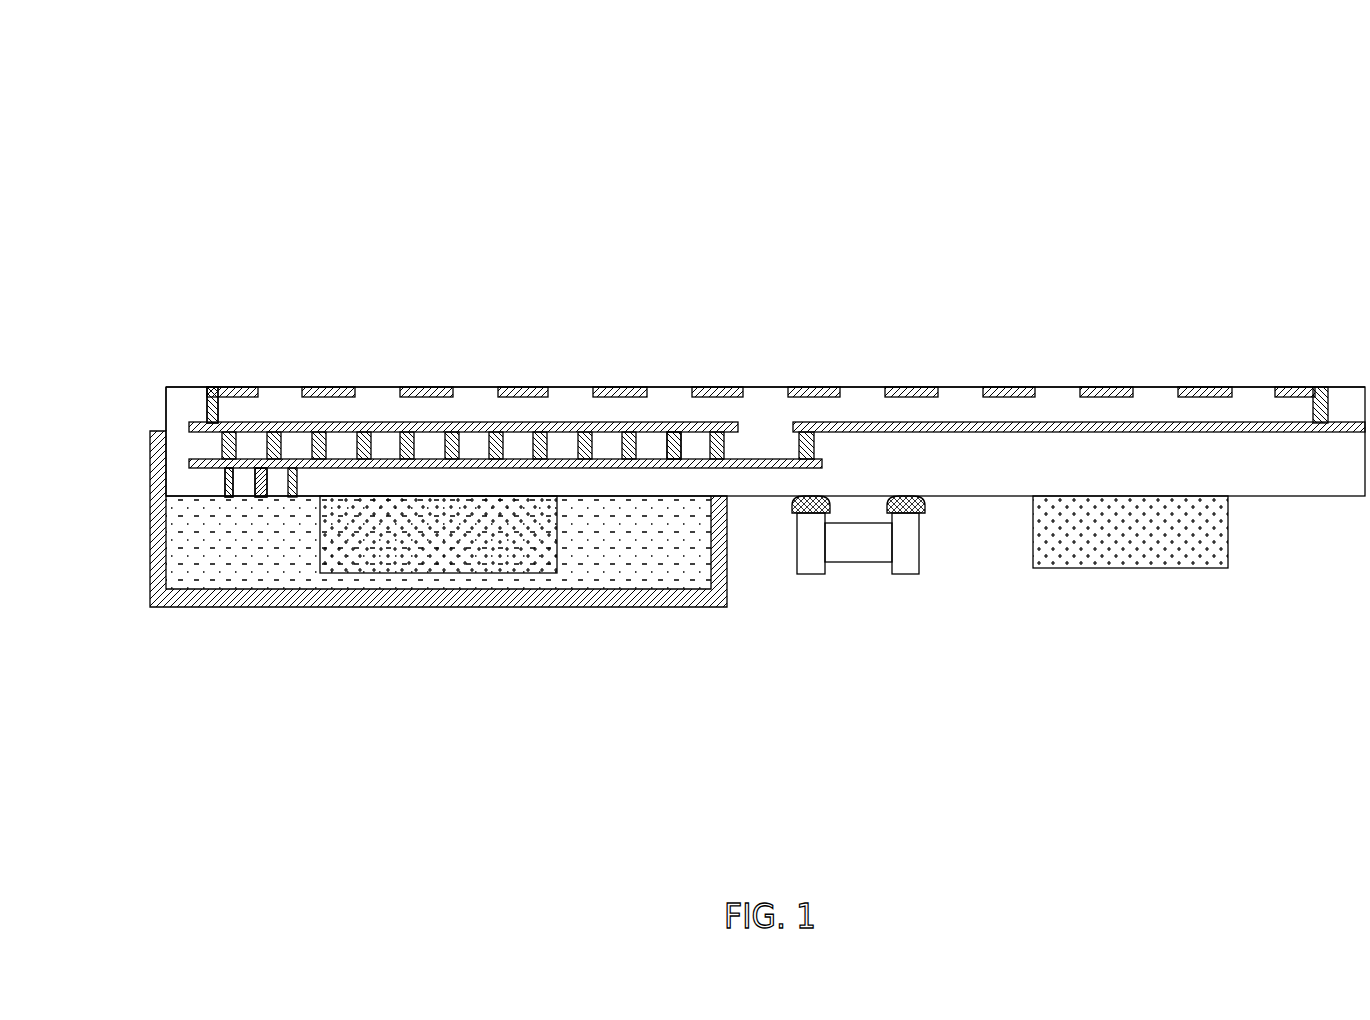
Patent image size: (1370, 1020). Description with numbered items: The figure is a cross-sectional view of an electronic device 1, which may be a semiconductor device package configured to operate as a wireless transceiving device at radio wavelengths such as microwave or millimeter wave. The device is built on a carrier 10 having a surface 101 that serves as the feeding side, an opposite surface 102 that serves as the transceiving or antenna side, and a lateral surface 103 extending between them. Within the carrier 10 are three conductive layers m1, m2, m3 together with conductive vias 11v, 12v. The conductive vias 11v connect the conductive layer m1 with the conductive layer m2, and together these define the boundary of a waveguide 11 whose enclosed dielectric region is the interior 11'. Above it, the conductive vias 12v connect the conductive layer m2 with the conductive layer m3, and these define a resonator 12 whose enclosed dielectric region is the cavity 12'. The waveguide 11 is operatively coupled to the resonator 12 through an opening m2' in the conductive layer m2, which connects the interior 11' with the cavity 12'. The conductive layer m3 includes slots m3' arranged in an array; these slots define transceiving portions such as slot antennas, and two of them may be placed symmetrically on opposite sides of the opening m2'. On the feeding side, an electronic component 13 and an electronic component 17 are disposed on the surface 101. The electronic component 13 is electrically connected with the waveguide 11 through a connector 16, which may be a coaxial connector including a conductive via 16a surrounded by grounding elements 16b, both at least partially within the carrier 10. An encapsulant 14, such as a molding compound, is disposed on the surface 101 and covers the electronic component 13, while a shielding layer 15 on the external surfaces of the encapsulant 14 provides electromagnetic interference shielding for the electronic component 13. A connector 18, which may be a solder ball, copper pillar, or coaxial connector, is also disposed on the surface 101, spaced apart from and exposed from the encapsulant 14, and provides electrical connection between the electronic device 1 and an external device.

The electronic device 1 is at (99, 44).
The carrier 10 is at (178, 428).
The surface 101 is at (587, 496).
The surface 102 is at (187, 387).
The surface 103 is at (166, 390).
The waveguide 11 is at (518, 348).
The interior 11' is at (555, 370).
The conductive via 11v is at (668, 440).
The resonator 12 is at (767, 330).
The cavity 12' is at (475, 352).
The conductive via 12v is at (217, 395).
The electronic component 13 is at (518, 563).
The encapsulant 14 is at (672, 575).
The shielding layer 15 is at (440, 607).
The connector 16 is at (325, 674).
The conductive via 16a is at (259, 497).
The grounding element 16b is at (230, 497).
The electronic component 17 is at (860, 550).
The connector 18 is at (1138, 548).
The conductive layer m1 is at (731, 462).
The conductive layer m2 is at (777, 357).
The opening m2' is at (785, 357).
The conductive layer m3 is at (761, 339).
The slot m3' is at (961, 339).